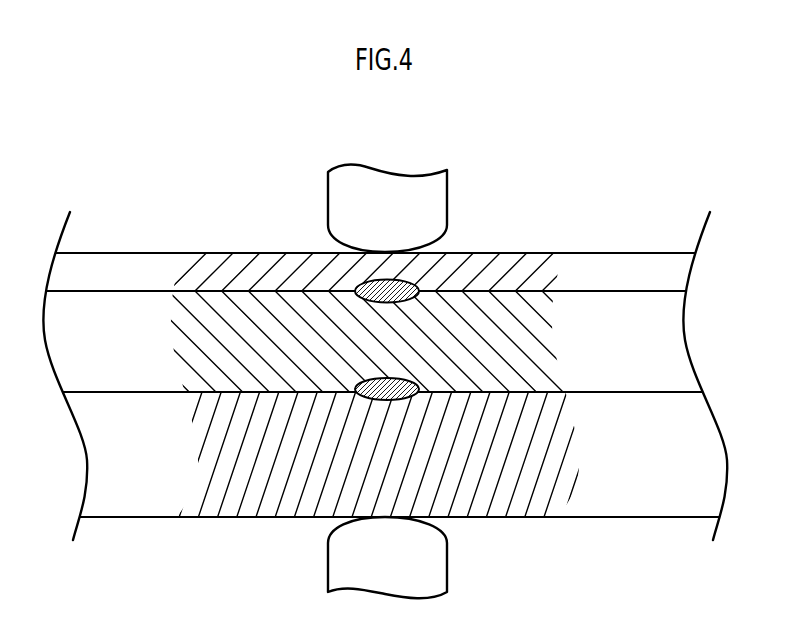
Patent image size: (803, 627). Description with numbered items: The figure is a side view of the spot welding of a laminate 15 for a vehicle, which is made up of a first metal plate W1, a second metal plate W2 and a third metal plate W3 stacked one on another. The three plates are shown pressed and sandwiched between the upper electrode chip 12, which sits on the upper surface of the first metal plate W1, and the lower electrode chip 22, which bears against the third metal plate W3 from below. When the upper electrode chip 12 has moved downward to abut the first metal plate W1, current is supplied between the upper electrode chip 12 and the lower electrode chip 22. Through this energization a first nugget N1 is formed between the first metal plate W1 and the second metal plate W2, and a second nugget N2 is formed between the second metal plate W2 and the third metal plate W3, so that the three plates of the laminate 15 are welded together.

The laminate 15 is at (153, 220).
The first metal plate W1 is at (250, 268).
The second metal plate W2 is at (213, 328).
The third metal plate W3 is at (240, 492).
The first nugget N1 is at (374, 303).
The second nugget N2 is at (379, 401).
The upper electrode chip 12 is at (447, 208).
The lower electrode chip 22 is at (430, 568).